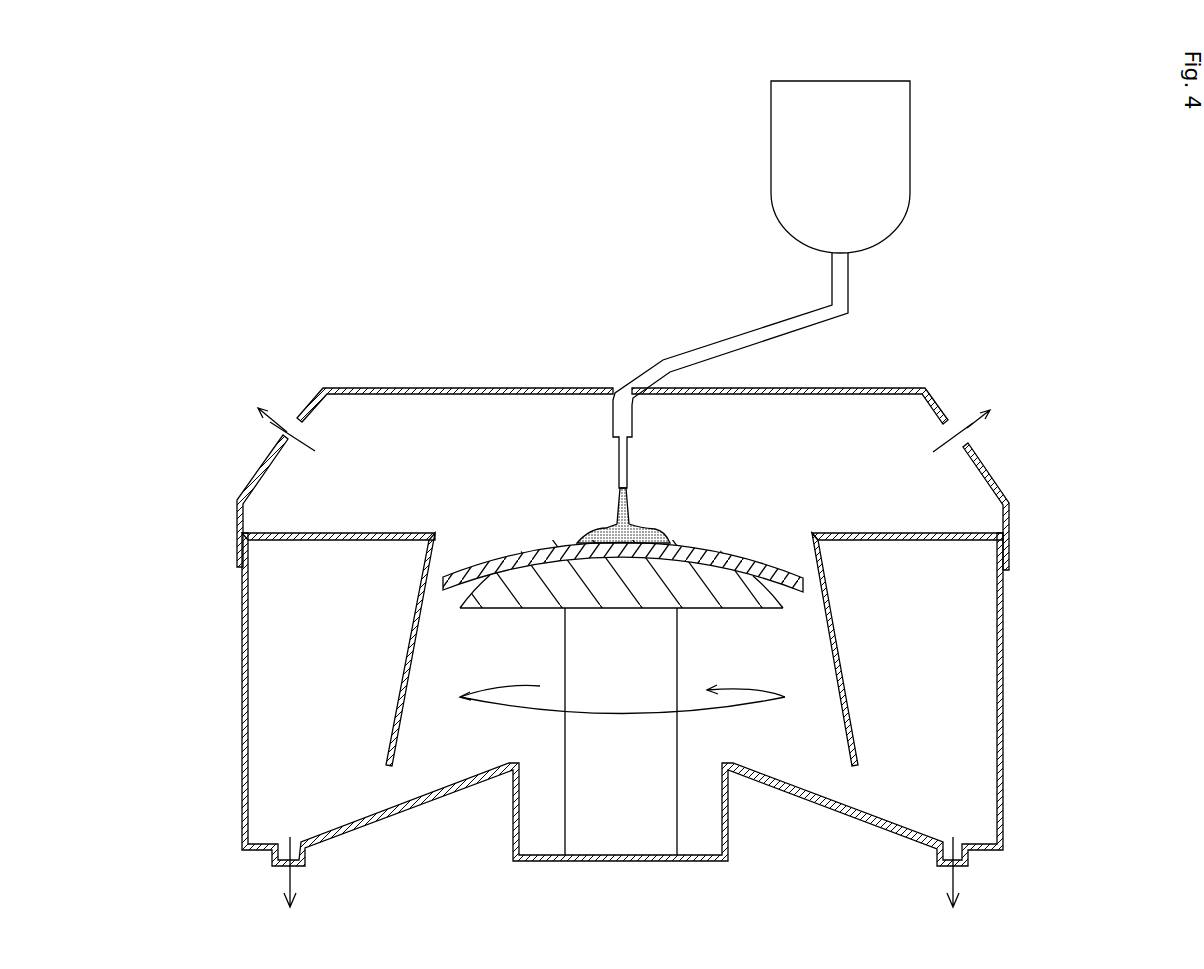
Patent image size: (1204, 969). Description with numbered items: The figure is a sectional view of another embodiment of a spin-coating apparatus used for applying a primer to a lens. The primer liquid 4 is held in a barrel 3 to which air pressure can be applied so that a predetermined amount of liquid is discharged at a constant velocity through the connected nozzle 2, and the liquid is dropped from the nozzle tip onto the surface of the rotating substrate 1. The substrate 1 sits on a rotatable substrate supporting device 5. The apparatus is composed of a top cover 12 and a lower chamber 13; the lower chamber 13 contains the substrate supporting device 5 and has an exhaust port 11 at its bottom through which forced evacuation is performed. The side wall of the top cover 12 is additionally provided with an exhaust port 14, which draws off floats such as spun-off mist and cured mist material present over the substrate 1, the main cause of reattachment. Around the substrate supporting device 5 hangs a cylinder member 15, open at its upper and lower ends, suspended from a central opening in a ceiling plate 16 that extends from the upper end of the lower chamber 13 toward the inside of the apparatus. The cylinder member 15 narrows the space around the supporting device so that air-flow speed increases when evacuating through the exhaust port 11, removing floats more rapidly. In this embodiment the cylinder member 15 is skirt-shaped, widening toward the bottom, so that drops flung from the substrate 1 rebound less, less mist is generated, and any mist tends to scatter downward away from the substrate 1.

The substrate 1 is at (738, 562).
The nozzle 2 is at (625, 462).
The barrel 3 is at (829, 173).
The primer liquid 4 is at (640, 527).
The substrate supporting device 5 is at (735, 602).
The exhaust port 11 is at (281, 868).
The top cover 12 is at (841, 390).
The lower chamber 13 is at (1005, 686).
The exhaust port 14 is at (283, 432).
The cylinder member 15 is at (406, 670).
The ceiling plate 16 is at (323, 541).